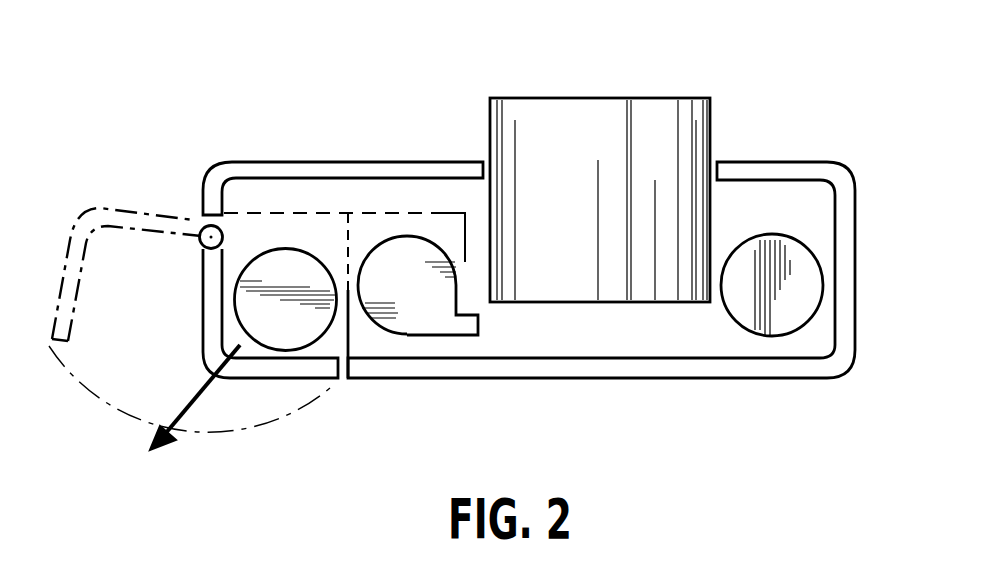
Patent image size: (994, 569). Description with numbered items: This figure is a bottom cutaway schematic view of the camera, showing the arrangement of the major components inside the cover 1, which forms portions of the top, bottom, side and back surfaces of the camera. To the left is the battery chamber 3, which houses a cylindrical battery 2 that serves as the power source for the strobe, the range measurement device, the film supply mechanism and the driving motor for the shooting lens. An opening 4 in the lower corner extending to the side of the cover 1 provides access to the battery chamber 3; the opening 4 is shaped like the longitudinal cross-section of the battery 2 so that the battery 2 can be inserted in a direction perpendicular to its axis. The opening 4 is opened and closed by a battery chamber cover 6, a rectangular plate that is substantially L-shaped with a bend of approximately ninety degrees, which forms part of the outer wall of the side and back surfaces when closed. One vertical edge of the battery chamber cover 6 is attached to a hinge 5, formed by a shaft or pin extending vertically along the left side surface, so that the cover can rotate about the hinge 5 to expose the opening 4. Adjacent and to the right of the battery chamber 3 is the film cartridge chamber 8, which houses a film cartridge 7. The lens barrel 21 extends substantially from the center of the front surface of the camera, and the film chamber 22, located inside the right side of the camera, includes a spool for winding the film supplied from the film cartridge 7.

The cover 1 is at (840, 358).
The cylindrical battery 2 is at (268, 268).
The battery chamber 3 is at (325, 212).
The opening 4 is at (278, 386).
The hinge 5 is at (205, 234).
The battery chamber cover 6 is at (205, 308).
The film cartridge 7 is at (383, 262).
The film cartridge chamber 8 is at (440, 212).
The lens barrel 21 is at (667, 108).
The film chamber 22 is at (812, 272).